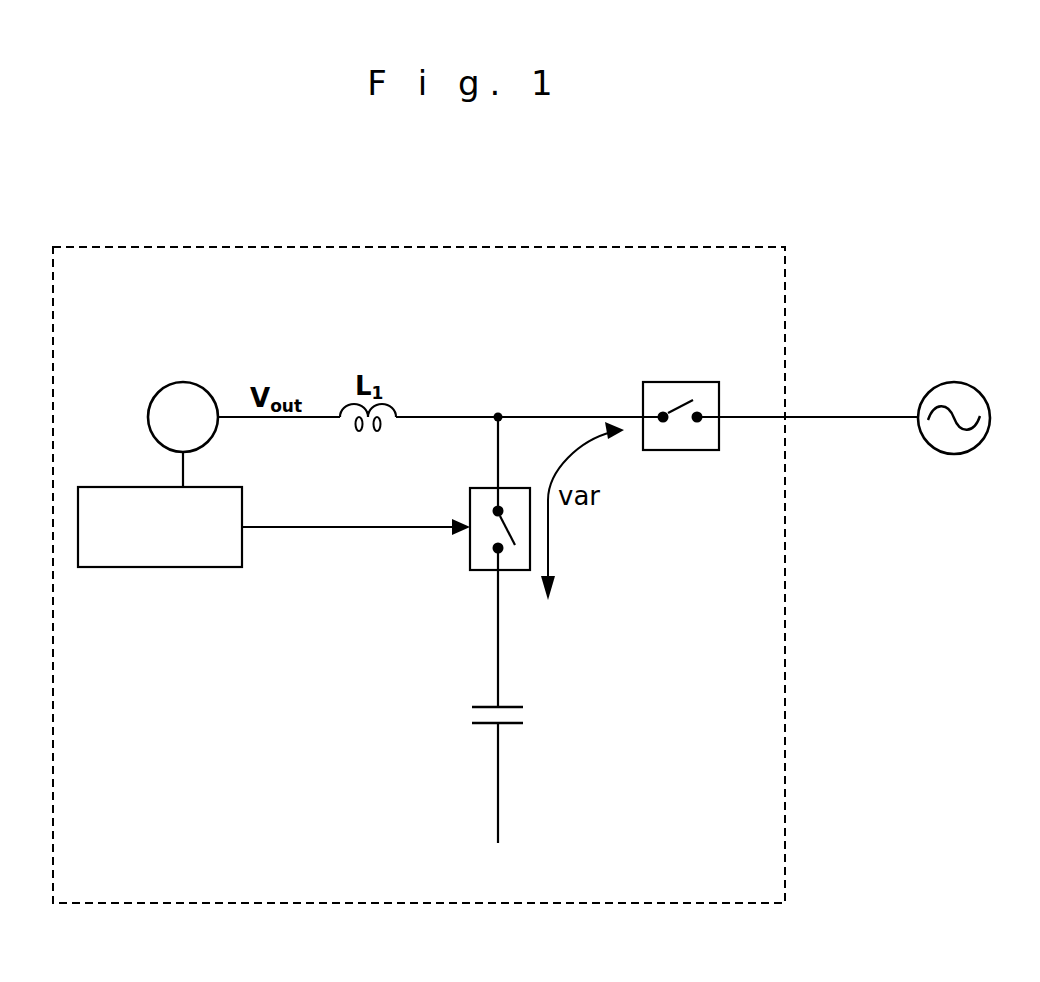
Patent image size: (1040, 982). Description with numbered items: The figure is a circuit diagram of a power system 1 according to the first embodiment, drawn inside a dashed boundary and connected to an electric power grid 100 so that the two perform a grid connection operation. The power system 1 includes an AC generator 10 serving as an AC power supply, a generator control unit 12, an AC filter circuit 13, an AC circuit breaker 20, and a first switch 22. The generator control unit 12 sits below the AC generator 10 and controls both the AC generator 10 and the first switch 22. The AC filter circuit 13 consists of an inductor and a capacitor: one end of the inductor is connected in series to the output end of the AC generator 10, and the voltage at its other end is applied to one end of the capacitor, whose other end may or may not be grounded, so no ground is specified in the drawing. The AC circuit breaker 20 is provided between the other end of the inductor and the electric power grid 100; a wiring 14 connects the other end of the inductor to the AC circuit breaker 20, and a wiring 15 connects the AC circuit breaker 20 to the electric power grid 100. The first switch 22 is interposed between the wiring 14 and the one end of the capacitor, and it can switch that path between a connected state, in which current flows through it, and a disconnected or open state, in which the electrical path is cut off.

The power system 1 is at (100, 246).
The AC generator 10 is at (183, 382).
The generator control unit 12 is at (183, 567).
The AC filter circuit 13 is at (453, 630).
The wiring 14 is at (478, 416).
The wiring 15 is at (751, 417).
The AC circuit breaker 20 is at (676, 382).
The first switch 22 is at (468, 503).
The electric power grid 100 is at (952, 382).